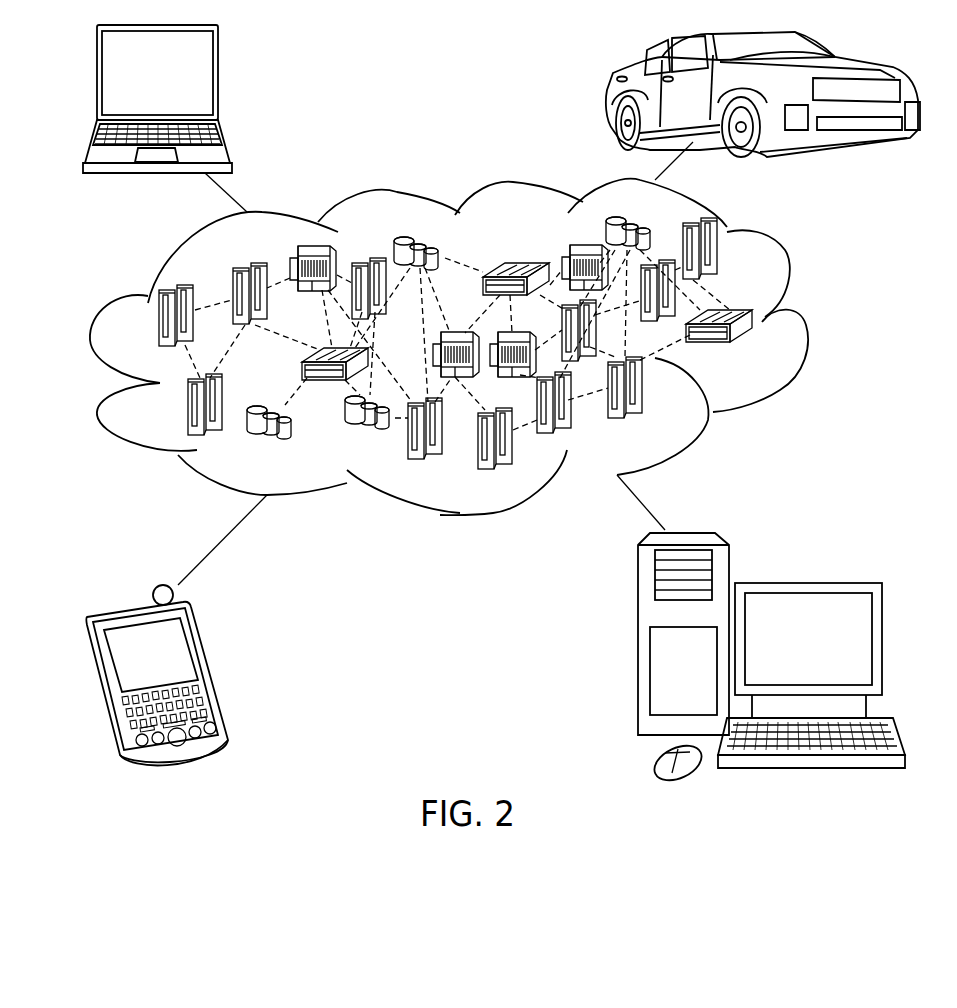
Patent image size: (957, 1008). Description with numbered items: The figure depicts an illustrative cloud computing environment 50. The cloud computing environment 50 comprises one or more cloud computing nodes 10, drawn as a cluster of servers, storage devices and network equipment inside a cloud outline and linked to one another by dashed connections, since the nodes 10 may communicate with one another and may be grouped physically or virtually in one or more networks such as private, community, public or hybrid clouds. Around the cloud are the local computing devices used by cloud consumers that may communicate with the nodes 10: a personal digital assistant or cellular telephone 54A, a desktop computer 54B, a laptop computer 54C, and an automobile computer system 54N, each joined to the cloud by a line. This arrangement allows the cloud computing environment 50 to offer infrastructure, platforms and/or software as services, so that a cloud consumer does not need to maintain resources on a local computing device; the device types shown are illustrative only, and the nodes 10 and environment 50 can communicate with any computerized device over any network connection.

The cloud computing node 10 is at (766, 346).
The cloud computing environment 50 is at (808, 323).
The personal digital assistant or cellular telephone 54A is at (212, 667).
The desktop computer 54B is at (805, 583).
The laptop computer 54C is at (218, 79).
The automobile computer system 54N is at (610, 92).